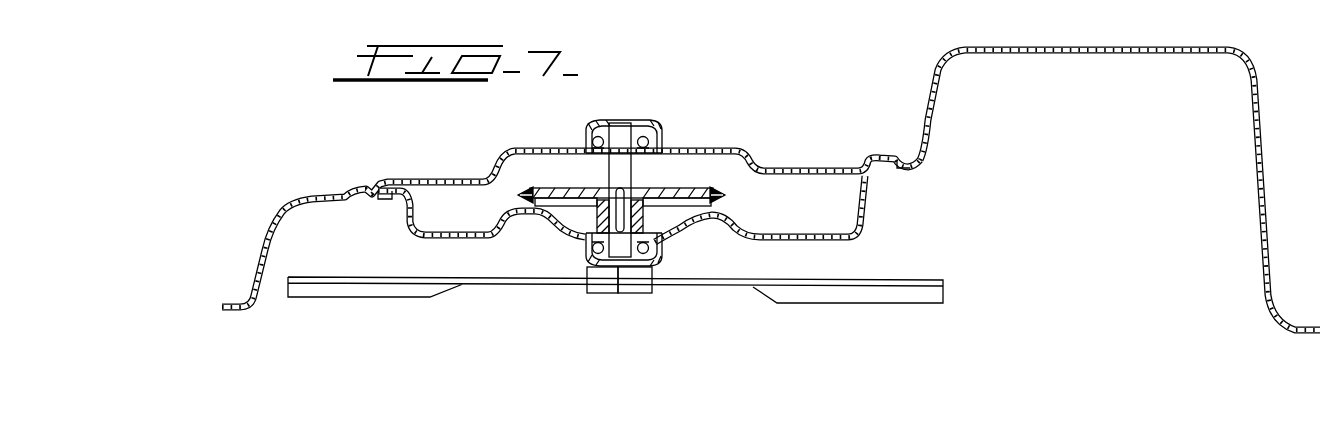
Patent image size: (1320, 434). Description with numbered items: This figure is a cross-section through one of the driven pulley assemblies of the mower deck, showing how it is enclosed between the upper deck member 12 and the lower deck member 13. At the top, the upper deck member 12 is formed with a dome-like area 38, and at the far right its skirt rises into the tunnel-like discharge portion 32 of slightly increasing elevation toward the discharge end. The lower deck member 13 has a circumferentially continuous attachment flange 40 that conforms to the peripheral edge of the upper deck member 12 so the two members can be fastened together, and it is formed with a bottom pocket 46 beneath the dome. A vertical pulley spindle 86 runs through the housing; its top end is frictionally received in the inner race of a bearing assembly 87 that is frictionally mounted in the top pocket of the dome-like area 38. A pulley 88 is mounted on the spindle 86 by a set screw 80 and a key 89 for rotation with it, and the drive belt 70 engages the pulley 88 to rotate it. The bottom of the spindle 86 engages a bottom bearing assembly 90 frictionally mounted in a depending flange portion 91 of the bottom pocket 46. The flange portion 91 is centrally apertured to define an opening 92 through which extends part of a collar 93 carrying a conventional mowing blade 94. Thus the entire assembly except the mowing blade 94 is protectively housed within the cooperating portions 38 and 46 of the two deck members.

The upper deck member 12 is at (772, 170).
The lower deck member 13 is at (858, 223).
The discharge tunnel 32 is at (1177, 46).
The dome-like area 38 is at (703, 152).
The attachment flange 40 is at (392, 198).
The bottom pocket 46 is at (687, 233).
The drive belt 70 is at (727, 194).
The set screw 80 is at (597, 217).
The pulley spindle 86 is at (627, 168).
The bearing assembly 87 is at (647, 136).
The pulley 88 is at (683, 191).
The key 89 is at (624, 212).
The bottom bearing assembly 90 is at (657, 253).
The depending flange portion 91 is at (584, 251).
The opening 92 is at (612, 266).
The collar 93 is at (648, 270).
The mowing blade 94 is at (940, 293).